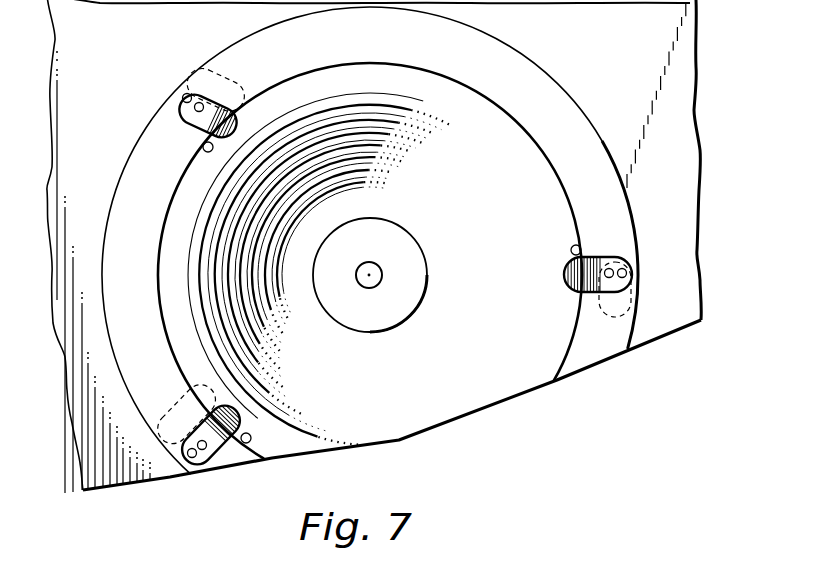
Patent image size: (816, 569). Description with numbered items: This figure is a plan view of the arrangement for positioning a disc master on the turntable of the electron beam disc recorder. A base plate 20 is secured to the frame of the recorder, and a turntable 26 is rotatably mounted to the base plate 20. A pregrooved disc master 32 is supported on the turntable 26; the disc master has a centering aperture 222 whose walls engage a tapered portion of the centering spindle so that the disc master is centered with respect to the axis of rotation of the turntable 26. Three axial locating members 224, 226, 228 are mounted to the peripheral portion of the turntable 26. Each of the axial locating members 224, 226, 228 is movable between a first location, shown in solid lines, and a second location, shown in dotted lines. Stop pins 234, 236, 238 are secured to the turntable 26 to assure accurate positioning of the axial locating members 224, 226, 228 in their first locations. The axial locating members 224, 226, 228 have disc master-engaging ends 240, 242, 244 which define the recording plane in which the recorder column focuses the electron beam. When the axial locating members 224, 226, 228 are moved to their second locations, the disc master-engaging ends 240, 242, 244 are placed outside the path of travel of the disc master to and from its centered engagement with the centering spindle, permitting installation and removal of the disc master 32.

The base plate 20 is at (691, 92).
The turntable 26 is at (636, 333).
The pregrooved disc master 32 is at (494, 78).
The centering aperture 222 is at (384, 273).
The axial locating member 224 is at (591, 258).
The axial locating member 226 is at (241, 92).
The axial locating member 228 is at (220, 462).
The stop pin 234 is at (572, 249).
The stop pin 236 is at (203, 147).
The stop pin 238 is at (250, 443).
The disc master-engaging end 240 is at (564, 277).
The disc master-engaging end 242 is at (234, 118).
The disc master-engaging end 244 is at (236, 422).